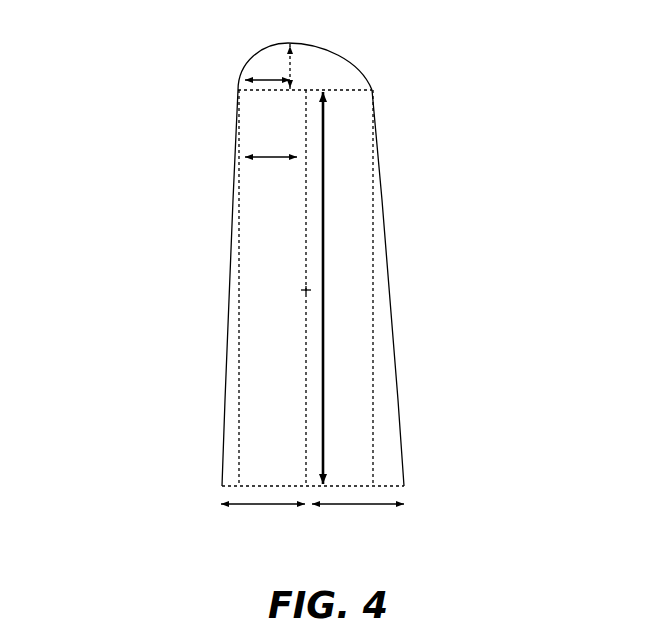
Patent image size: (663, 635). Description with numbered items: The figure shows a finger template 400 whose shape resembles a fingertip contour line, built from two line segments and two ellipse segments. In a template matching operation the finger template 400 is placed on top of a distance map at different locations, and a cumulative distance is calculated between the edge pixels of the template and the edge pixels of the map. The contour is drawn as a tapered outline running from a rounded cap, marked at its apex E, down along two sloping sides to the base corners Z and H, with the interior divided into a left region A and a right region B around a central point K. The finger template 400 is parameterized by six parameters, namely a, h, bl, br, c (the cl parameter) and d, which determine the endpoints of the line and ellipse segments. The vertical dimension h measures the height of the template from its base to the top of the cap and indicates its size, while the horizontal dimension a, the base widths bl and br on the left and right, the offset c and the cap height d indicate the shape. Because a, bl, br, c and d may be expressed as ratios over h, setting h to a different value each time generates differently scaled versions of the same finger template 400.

The finger template 400 is at (305, 277).
The top apex point E (red) E is at (305, 49).
The bottom-left corner point Z (magenta) Z is at (141, 290).
The bottom-right corner point H (yellow) H is at (468, 291).
The left region A is at (272, 288).
The right region B is at (361, 288).
The center point K is at (291, 293).
The parameter h is at (335, 288).
The parameter a is at (271, 170).
The parameter cl c is at (267, 66).
The parameter d is at (300, 67).
The parameter bl is at (263, 525).
The parameter br is at (358, 525).